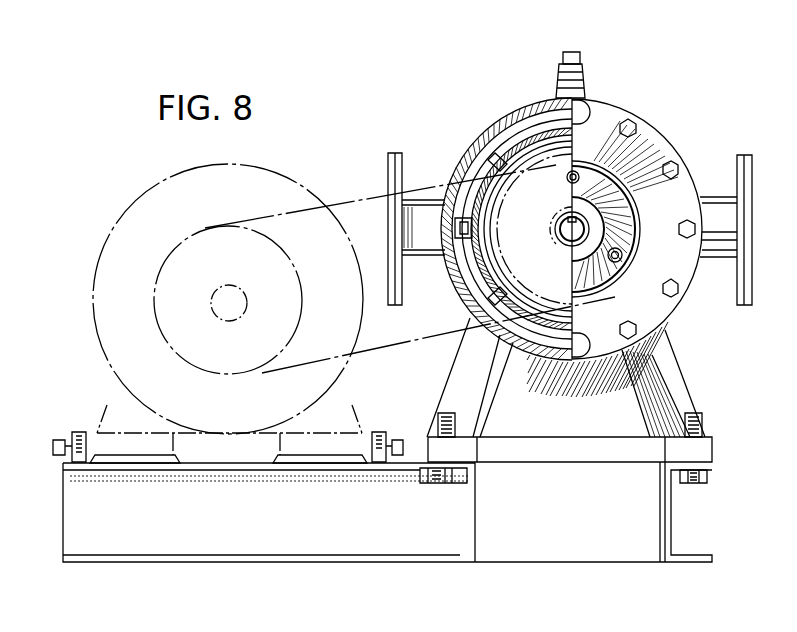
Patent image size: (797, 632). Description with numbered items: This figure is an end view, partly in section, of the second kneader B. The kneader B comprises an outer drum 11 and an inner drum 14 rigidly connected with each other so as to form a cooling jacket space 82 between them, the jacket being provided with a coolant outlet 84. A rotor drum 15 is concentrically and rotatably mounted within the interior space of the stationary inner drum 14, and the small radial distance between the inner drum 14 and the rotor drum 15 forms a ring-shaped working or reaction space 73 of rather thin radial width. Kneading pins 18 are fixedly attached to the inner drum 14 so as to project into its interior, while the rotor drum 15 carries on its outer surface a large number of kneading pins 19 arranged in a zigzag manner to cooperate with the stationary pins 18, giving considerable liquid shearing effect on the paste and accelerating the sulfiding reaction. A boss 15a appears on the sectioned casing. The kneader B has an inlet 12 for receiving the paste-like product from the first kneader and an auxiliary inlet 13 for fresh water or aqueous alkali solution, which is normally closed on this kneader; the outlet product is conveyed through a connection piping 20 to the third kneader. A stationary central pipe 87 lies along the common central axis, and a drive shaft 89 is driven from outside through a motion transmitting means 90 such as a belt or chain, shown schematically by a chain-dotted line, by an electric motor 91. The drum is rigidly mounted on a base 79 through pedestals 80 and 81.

The second kneader B is at (671, 127).
The outer drum 11 is at (508, 118).
The inlet 12 is at (425, 213).
The auxiliary inlet 13 is at (565, 53).
The inner drum 14 is at (496, 150).
The rotor drum 15 is at (503, 240).
The casing boss 15a is at (554, 172).
The kneading pins 18 is at (485, 230).
The kneading pins 19 is at (496, 163).
The connection piping 20 is at (718, 210).
The working or reaction space 73 is at (470, 262).
The base 79 is at (670, 508).
The pedestal 80 is at (462, 378).
The pedestal 81 is at (685, 393).
The cooling jacket space 82 is at (527, 338).
The coolant outlet 84 is at (585, 70).
The stationary central pipe 87 is at (558, 240).
The drive shaft 89 is at (580, 223).
The motion transmitting means 90 is at (345, 353).
The electric motor 91 is at (145, 195).